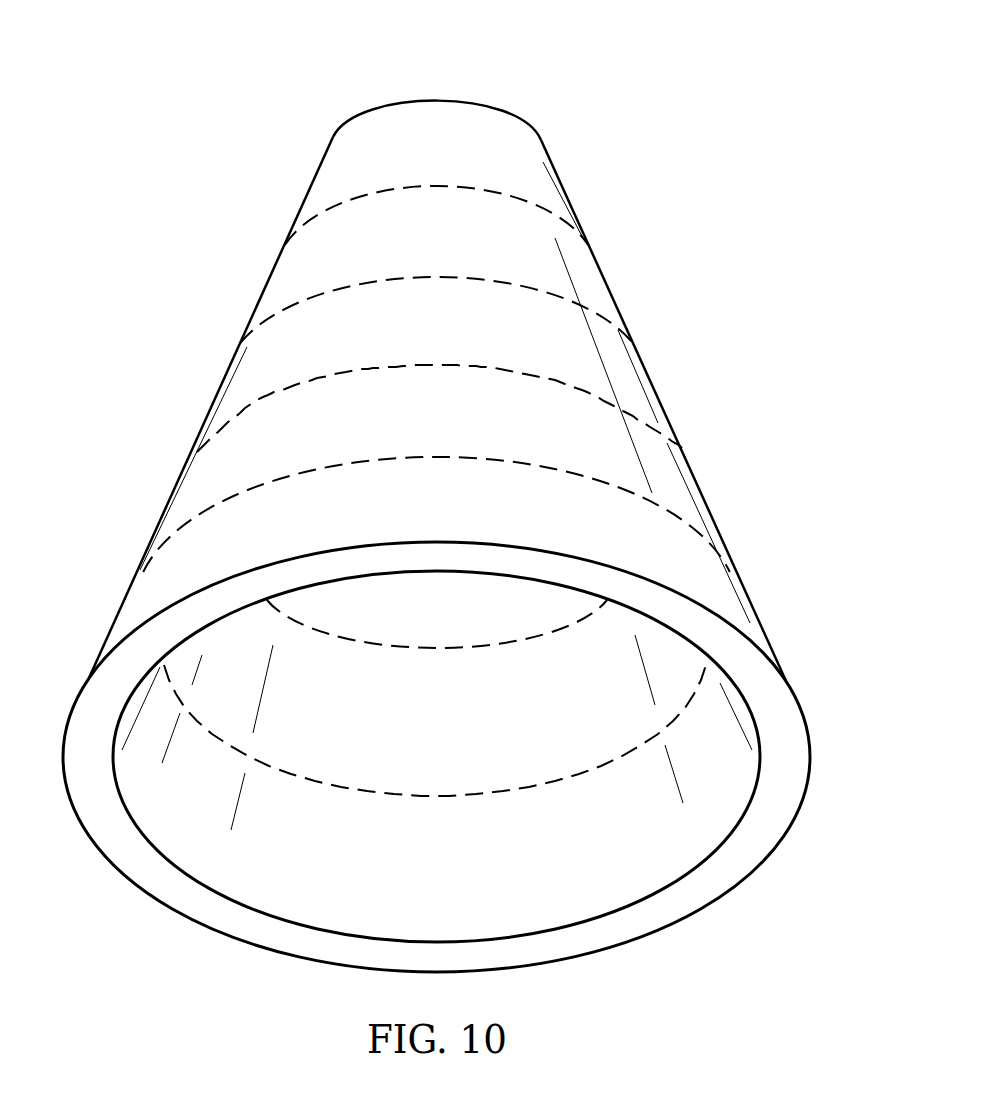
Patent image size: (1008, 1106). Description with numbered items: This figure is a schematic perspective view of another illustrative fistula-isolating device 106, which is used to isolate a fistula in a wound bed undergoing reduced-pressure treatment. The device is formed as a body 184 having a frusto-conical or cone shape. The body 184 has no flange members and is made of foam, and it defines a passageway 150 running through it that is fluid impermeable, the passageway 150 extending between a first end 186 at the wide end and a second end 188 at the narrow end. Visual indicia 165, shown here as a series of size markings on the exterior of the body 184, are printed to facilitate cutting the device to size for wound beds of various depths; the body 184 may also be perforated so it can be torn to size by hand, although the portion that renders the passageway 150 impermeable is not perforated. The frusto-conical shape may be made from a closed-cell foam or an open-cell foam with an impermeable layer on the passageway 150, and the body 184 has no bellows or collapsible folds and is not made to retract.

The fistula-isolating device 106 is at (471, 534).
The second end 188 is at (487, 103).
The visual indicia 165 is at (288, 308).
The body 184 is at (165, 503).
The first end 186 is at (807, 723).
The passageway 150 is at (272, 888).